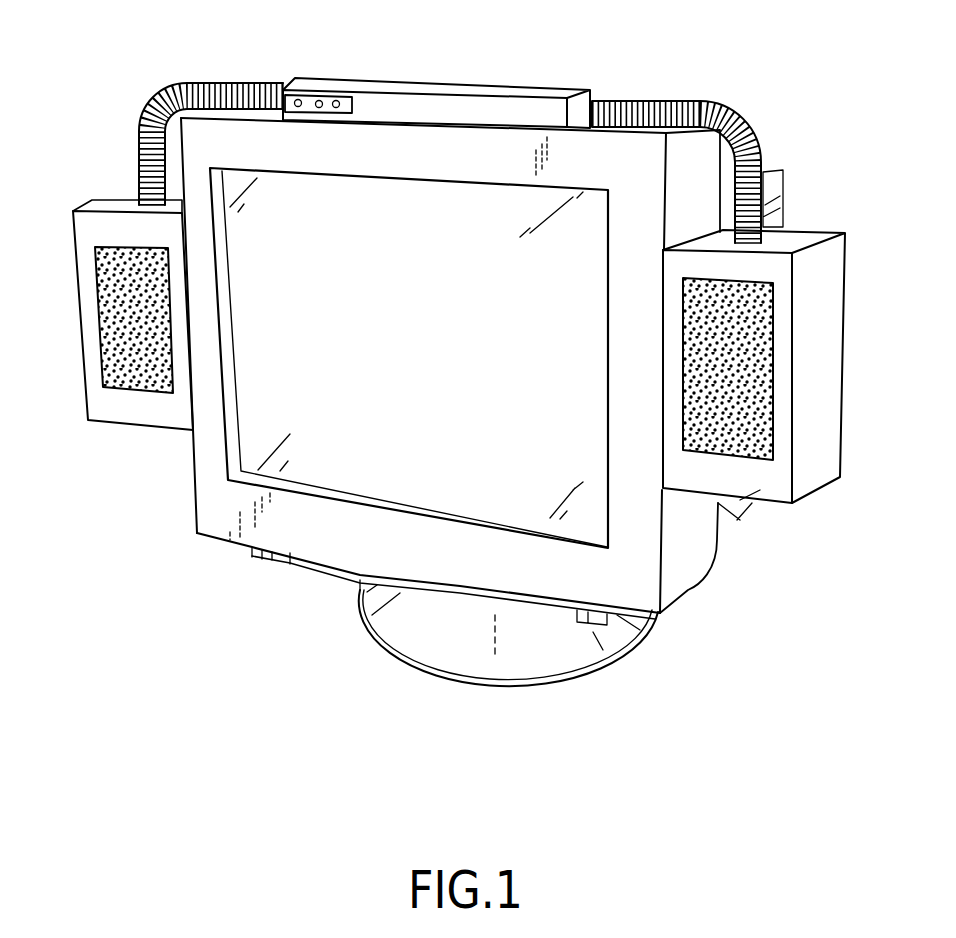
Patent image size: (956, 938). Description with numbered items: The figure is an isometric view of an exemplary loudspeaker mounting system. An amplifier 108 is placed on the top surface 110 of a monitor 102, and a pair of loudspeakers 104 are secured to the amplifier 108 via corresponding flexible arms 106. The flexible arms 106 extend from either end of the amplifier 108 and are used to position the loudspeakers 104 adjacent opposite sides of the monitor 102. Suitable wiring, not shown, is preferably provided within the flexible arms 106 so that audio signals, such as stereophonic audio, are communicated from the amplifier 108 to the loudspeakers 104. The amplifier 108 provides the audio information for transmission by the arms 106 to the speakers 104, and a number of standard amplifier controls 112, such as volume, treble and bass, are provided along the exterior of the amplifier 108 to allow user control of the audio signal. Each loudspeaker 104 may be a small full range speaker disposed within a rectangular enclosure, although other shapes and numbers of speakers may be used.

The monitor 102 is at (410, 318).
The loudspeaker 104 is at (77, 288).
The flexible arm 106 is at (170, 88).
The amplifier 108 is at (435, 82).
The top surface 110 is at (648, 100).
The amplifier controls 112 is at (352, 108).